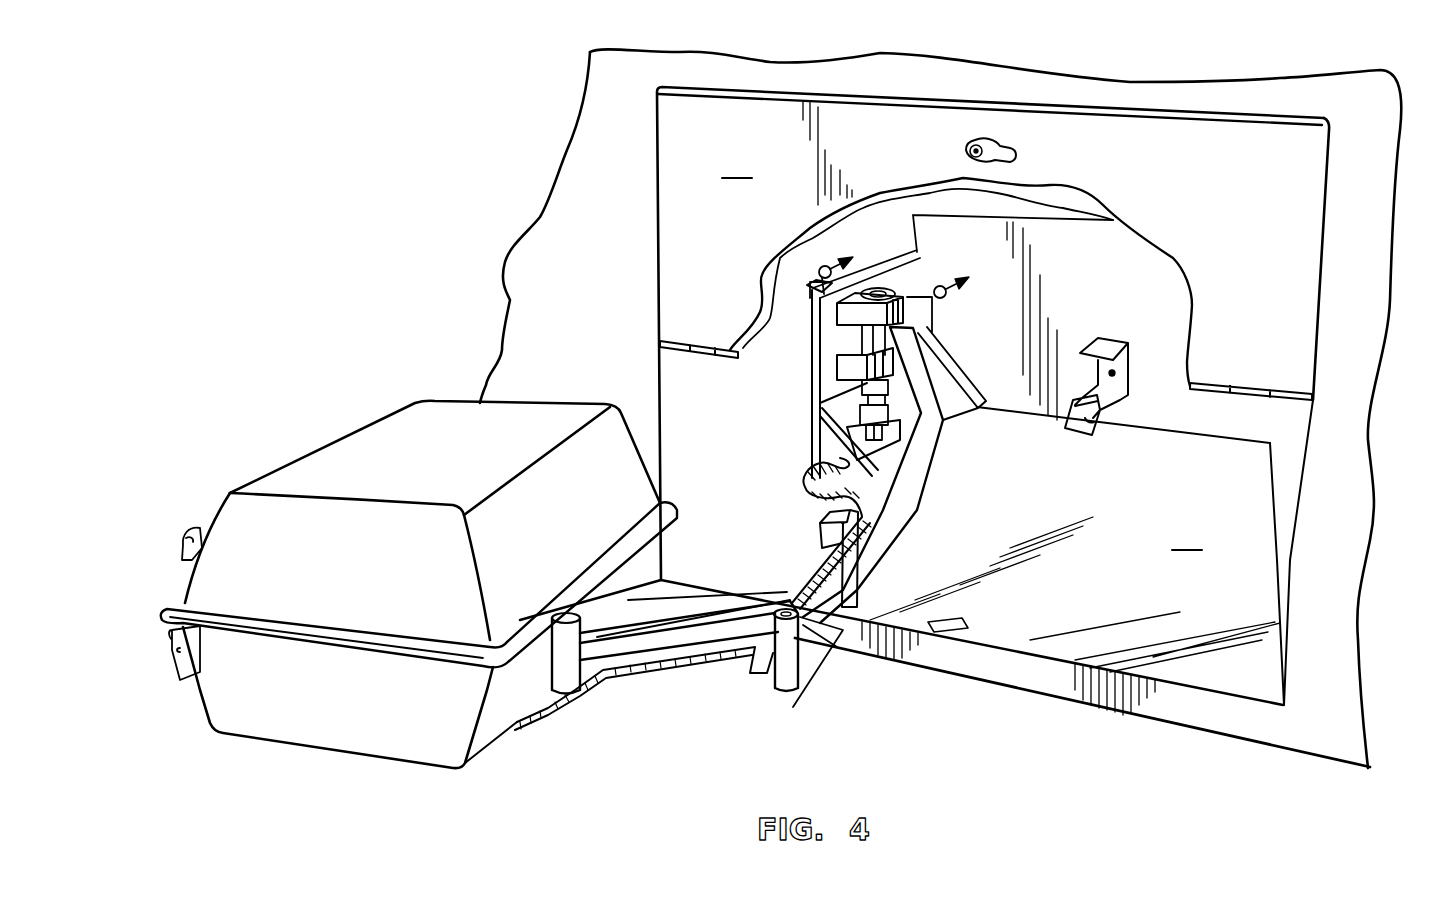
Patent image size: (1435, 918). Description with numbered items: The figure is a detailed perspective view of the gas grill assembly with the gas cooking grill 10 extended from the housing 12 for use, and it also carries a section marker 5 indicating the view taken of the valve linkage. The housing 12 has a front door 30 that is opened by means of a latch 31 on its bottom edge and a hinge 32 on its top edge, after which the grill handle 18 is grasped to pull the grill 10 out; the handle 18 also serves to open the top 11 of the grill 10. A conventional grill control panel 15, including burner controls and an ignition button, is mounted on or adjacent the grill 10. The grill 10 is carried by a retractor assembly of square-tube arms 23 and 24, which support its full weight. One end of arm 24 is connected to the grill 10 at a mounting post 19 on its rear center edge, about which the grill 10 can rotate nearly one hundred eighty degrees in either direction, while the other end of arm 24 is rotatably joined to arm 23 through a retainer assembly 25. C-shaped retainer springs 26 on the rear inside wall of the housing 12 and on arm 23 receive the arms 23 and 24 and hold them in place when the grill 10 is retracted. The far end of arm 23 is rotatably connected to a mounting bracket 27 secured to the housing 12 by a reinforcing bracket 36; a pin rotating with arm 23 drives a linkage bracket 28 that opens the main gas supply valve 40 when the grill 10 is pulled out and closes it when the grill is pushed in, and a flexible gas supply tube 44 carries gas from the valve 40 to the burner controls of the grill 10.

The gas cooking grill 10 is at (310, 706).
The top 11 is at (320, 468).
The housing 12 is at (945, 587).
The grill control panel 15 is at (178, 655).
The grill handle 18 is at (183, 532).
The mounting post 19 is at (578, 608).
The arm 23 is at (905, 490).
The arm 24 is at (752, 638).
The retainer assembly 25 is at (815, 635).
The retractor assembly retainer spring 26 is at (1095, 430).
The mounting bracket 27 is at (838, 342).
The linkage bracket 28 is at (855, 398).
The door 30 is at (993, 396).
The latch 31 is at (1017, 158).
The hinge 32 is at (1217, 390).
The reinforcing bracket 36 is at (830, 437).
The main gas supply valve 40 is at (888, 436).
The flexible gas supply tube 44 is at (805, 487).
The section line for FIG. 5 is at (879, 296).